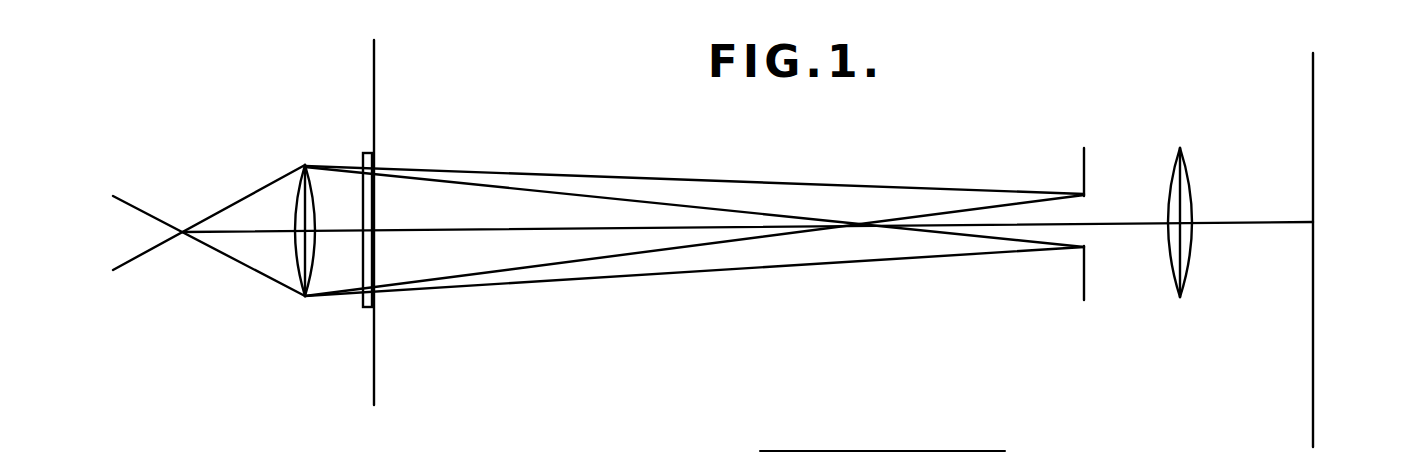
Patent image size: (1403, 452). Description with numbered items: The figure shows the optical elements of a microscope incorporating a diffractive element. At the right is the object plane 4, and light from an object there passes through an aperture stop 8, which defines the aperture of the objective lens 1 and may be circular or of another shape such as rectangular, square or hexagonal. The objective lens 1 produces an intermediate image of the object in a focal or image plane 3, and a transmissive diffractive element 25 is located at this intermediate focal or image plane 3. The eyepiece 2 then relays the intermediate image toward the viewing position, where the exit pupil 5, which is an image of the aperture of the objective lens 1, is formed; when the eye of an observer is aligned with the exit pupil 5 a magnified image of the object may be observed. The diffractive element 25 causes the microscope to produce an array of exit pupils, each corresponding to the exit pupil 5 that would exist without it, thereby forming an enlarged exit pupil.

The objective lens 1 is at (1180, 148).
The eyepiece 2 is at (305, 166).
The focal or image plane 3 is at (374, 88).
The object plane 4 is at (1313, 428).
The exit pupil 5 is at (183, 226).
The aperture stop 8 is at (1085, 148).
The diffractive element 25 is at (365, 308).